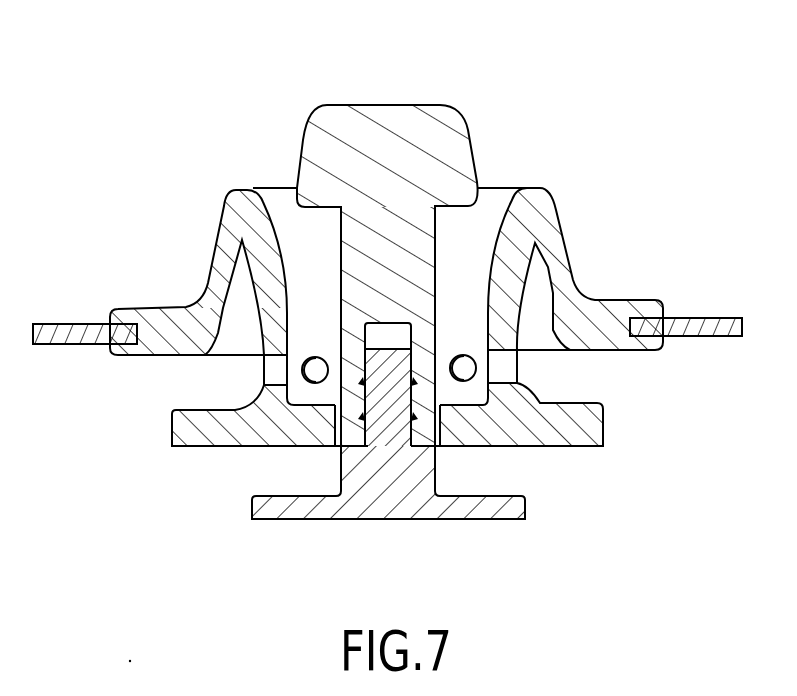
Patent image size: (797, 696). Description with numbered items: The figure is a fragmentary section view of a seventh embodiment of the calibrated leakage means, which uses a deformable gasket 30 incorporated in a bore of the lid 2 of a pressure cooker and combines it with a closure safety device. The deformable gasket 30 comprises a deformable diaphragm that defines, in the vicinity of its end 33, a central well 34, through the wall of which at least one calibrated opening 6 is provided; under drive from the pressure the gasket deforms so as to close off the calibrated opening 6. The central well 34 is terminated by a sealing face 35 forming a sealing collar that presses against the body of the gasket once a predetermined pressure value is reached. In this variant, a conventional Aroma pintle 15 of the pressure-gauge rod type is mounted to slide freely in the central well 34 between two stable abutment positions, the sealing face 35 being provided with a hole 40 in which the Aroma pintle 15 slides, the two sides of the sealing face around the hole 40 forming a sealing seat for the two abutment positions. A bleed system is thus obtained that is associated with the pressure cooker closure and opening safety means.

The lid 2 is at (718, 318).
The calibrated opening 6 is at (270, 372).
The Aroma pintle 15 is at (455, 92).
The deformable gasket 30 is at (562, 200).
The end 33 is at (228, 453).
The central well 34 is at (285, 215).
The sealing face 35 is at (562, 428).
The hole 40 is at (338, 447).